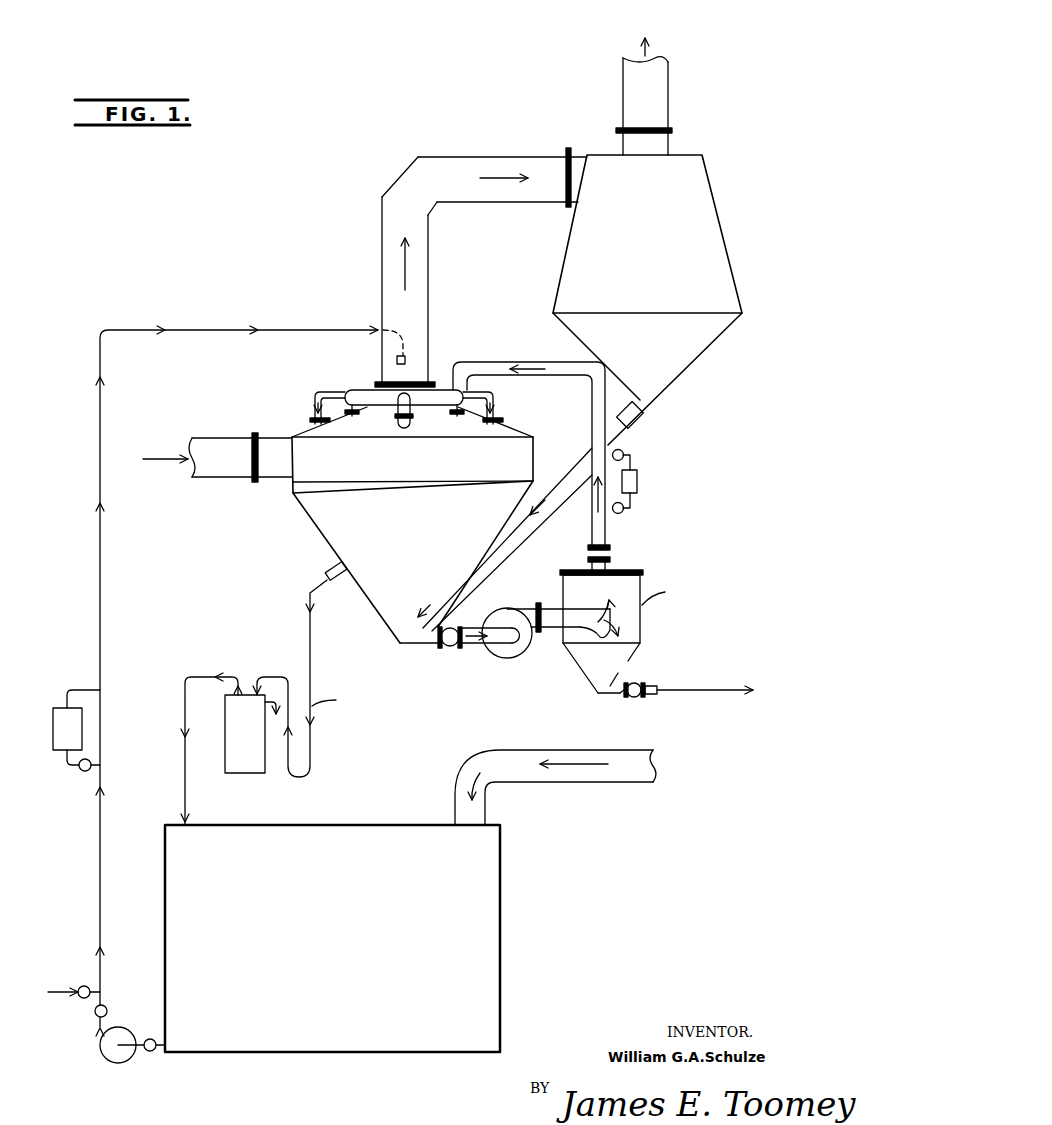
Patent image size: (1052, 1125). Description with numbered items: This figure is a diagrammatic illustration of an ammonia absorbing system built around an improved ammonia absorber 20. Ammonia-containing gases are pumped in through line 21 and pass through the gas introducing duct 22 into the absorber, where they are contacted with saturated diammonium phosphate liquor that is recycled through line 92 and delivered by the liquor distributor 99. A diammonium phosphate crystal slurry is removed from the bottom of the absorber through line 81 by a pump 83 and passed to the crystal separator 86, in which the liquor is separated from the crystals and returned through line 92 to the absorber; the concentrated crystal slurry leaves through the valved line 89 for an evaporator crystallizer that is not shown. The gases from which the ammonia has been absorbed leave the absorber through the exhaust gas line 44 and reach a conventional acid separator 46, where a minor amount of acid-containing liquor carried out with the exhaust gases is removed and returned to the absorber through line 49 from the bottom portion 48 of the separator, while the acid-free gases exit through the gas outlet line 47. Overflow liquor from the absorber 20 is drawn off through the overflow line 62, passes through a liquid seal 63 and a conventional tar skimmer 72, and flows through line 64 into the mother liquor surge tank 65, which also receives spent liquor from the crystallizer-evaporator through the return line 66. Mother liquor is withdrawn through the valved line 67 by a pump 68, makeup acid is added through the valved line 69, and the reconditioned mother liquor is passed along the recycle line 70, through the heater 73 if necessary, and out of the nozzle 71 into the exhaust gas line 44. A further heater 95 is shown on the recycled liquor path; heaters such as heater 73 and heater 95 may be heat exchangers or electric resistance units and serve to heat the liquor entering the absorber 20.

The ammonia absorber 20 is at (428, 525).
The line 21 is at (235, 479).
The gas introducing duct 22 is at (534, 460).
The exhaust gas line 44 is at (428, 283).
The acid separator 46 is at (631, 287).
The gas outlet line 47 is at (670, 103).
The bottom portion of the acid separator 48 is at (683, 373).
The line 49 is at (521, 530).
The overflow line 62 is at (328, 573).
The liquid seal 63 is at (311, 742).
The line 64 is at (184, 776).
The mother liquor surge tank 65 is at (321, 989).
The return line 66 is at (550, 749).
The valved line 67 is at (163, 1052).
The pump 68 is at (108, 1058).
The valved line 69 is at (75, 997).
The recycle line 70 is at (100, 583).
The nozzle 71 is at (405, 359).
The tar skimmer 72 is at (225, 731).
The heater 73 is at (53, 728).
The line 81 is at (435, 647).
The circulating pump 83 is at (518, 654).
The crystal separator 86 is at (688, 619).
The valved line 89 is at (615, 692).
The line 92 is at (585, 378).
The heater 95 is at (638, 484).
The liquor distributor 99 is at (338, 392).